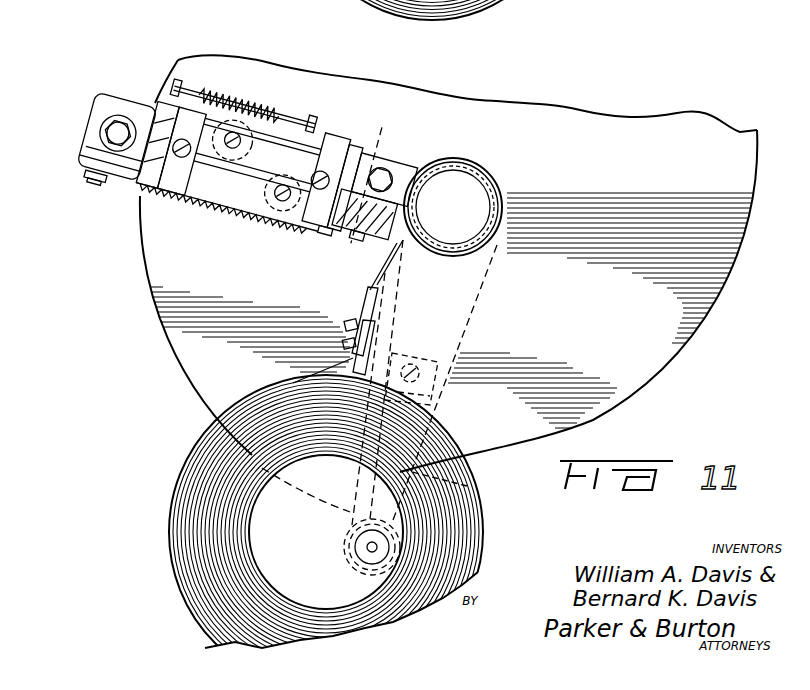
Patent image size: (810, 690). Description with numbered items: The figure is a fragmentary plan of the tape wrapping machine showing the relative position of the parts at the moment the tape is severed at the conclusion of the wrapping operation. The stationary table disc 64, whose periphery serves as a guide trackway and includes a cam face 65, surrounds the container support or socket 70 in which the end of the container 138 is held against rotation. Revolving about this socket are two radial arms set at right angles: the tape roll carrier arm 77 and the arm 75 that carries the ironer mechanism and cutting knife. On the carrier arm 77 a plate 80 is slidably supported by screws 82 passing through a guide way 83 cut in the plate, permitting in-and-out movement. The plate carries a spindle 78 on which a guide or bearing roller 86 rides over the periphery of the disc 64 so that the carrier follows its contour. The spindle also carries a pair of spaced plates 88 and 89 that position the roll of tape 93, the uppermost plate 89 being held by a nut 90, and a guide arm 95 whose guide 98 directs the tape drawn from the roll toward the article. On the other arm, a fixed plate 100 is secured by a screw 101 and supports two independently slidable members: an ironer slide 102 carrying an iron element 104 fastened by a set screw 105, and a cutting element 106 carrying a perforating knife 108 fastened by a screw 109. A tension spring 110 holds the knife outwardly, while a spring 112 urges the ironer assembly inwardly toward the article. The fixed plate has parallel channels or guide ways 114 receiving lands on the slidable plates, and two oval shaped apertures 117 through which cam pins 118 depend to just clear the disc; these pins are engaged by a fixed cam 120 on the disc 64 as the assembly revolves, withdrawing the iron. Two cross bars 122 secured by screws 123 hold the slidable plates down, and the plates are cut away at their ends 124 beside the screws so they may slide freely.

The table disc 64 is at (717, 147).
The cam face 65 is at (467, 484).
The container support or socket 70 is at (498, 188).
The arm 75 is at (379, 146).
The tape roll carrier arm 77 is at (477, 295).
The spindle 78 is at (363, 555).
The plate 80 is at (427, 403).
The screws 82 is at (420, 375).
The guide way 83 is at (413, 392).
The guide or bearing roller 86 is at (357, 542).
The plate 88 is at (175, 554).
The plate 89 is at (357, 588).
The nut 90 is at (367, 547).
The tape 93 is at (390, 262).
The guide arm 95 is at (367, 338).
The guide 98 is at (377, 295).
The plate 100 is at (100, 170).
The screw 101 is at (118, 132).
The ironer slide 102 is at (345, 147).
The iron element 104 is at (407, 167).
The set screw 105 is at (381, 175).
The cutting element 106 is at (332, 232).
The perforating knife 108 is at (377, 247).
The screw 109 is at (352, 245).
The tension spring 110 is at (150, 193).
The spring 112 is at (209, 97).
The channels or guide ways 114 is at (88, 142).
The oval shaped apertures 117 is at (258, 135).
The cam pins 118 is at (233, 132).
The fixed cam 120 is at (273, 105).
The cross bars 122 is at (190, 127).
The screws 123 is at (321, 188).
The cut away ends 124 is at (158, 130).
The container 138 is at (483, 160).